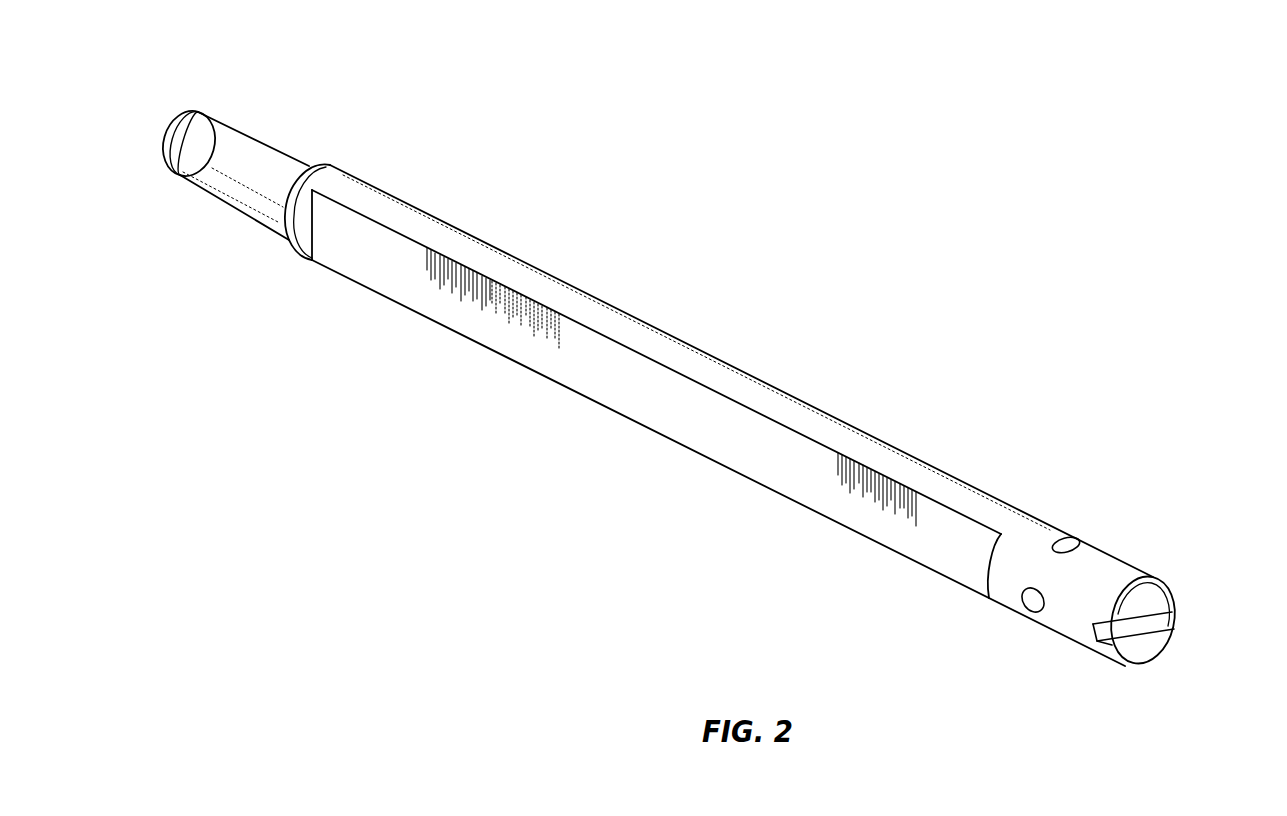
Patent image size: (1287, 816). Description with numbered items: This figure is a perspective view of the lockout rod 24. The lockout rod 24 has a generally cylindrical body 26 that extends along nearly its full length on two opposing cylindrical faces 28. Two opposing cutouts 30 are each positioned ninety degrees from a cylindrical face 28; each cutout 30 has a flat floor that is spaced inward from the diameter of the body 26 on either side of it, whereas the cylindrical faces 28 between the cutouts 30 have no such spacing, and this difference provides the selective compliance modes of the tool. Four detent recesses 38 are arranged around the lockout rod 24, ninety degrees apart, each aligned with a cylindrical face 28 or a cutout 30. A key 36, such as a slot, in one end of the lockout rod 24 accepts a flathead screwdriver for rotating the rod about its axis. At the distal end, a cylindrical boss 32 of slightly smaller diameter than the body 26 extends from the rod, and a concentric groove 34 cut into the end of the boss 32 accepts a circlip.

The lockout rod 24 is at (938, 378).
The cylindrical body 26 is at (1110, 570).
The cylindrical face 28 is at (640, 333).
The cutout 30 is at (640, 390).
The cylindrical boss 32 is at (243, 153).
The concentric groove 34 is at (200, 108).
The key 36 is at (1140, 623).
The detent recess 38 is at (1043, 596).